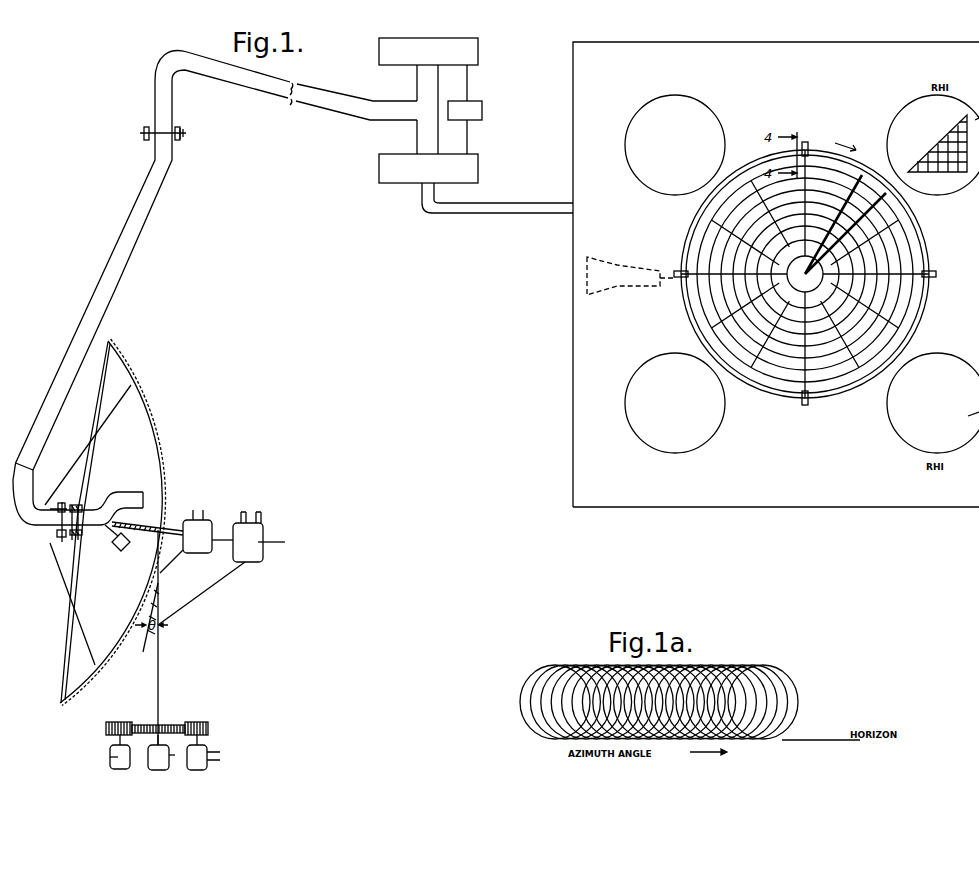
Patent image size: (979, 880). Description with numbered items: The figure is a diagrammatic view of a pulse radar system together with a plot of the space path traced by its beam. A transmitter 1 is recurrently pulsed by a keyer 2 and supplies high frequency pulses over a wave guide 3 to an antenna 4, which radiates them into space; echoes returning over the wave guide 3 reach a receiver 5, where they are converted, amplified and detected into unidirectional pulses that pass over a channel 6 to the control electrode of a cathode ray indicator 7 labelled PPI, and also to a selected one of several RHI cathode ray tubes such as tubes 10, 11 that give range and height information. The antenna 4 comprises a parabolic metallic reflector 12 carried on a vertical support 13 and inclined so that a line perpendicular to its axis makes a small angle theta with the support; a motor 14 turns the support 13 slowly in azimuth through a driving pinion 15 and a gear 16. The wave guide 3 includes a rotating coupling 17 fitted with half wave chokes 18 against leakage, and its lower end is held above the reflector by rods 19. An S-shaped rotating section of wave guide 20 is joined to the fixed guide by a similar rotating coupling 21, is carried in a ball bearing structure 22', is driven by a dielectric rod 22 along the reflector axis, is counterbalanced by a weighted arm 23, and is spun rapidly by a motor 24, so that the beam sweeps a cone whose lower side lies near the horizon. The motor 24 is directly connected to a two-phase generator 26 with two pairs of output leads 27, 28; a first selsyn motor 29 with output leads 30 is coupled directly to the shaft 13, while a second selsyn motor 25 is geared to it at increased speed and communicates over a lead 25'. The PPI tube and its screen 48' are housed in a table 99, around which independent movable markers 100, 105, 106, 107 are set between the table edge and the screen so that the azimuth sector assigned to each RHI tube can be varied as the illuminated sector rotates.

The transmitter 1 is at (480, 46).
The keyer 2 is at (484, 110).
The wave guide 3 is at (135, 228).
The antenna 4 is at (80, 440).
The receiver 5 is at (480, 166).
The channel 6 is at (496, 213).
The cathode ray indicator 7 is at (614, 290).
The cathode ray tube 10 is at (645, 427).
The cathode ray tube 11 is at (646, 118).
The parabolic metallic reflector 12 is at (146, 401).
The vertical support 13 is at (160, 672).
The motor 14 is at (205, 753).
The driving pinion 15 is at (209, 725).
The gear 16 is at (170, 723).
The rotating coupling 17 is at (182, 135).
The half wave chokes 18 is at (150, 128).
The rods 19 is at (72, 468).
The rotating section of wave guide 20 is at (118, 494).
The rotating coupling 21 is at (58, 539).
The rod 22 is at (147, 519).
The ball bearing structure 22' is at (55, 541).
The weighted arm 23 is at (117, 552).
The motor 24 is at (207, 522).
The selsyn motor 25 is at (110, 757).
The lead 25' is at (96, 766).
The two-phase generator 26 is at (262, 530).
The output leads 27 is at (243, 511).
The output leads 28 is at (259, 512).
The selsyn motor 29 is at (165, 755).
The output leads 30 is at (147, 757).
The screen 48' is at (818, 283).
The table 99 is at (808, 49).
The marker 100 is at (806, 144).
The marker 105 is at (934, 276).
The marker 106 is at (805, 405).
The marker 107 is at (672, 268).